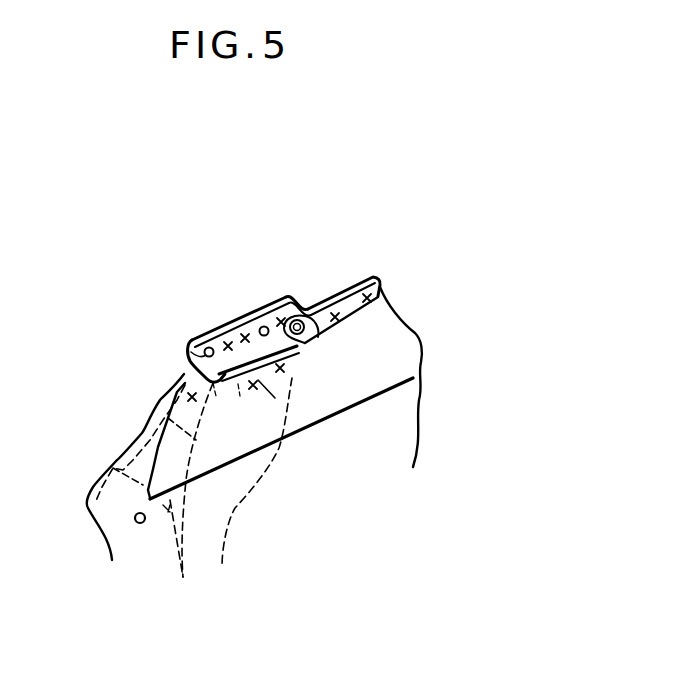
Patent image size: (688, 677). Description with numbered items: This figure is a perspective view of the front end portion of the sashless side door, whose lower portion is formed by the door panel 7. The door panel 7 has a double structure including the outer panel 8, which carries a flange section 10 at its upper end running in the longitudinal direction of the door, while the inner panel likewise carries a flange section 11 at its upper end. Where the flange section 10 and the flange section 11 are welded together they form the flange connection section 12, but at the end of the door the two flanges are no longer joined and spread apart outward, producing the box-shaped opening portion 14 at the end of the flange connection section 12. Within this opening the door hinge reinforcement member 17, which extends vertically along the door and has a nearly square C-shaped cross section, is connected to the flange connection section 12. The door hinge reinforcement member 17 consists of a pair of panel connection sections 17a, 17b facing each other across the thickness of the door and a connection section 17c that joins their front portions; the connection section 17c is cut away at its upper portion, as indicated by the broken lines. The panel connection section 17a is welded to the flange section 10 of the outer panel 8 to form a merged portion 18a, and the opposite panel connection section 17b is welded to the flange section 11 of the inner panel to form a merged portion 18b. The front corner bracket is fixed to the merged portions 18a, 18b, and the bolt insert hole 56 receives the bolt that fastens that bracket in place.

The door panel 7 is at (416, 333).
The outer panel 8 is at (402, 438).
The flange section 10 is at (305, 343).
The flange section 11 is at (287, 292).
The flange connection section 12 is at (365, 275).
The box-shaped opening portion 14 is at (295, 294).
The door hinge reinforcement member 17 is at (231, 508).
The panel connection section 17a is at (294, 353).
The panel connection section 17b is at (195, 341).
The connection section 17c is at (150, 557).
The merged portion 18a is at (267, 392).
The merged portion 18b is at (223, 323).
The bolt insert hole 56 is at (262, 324).